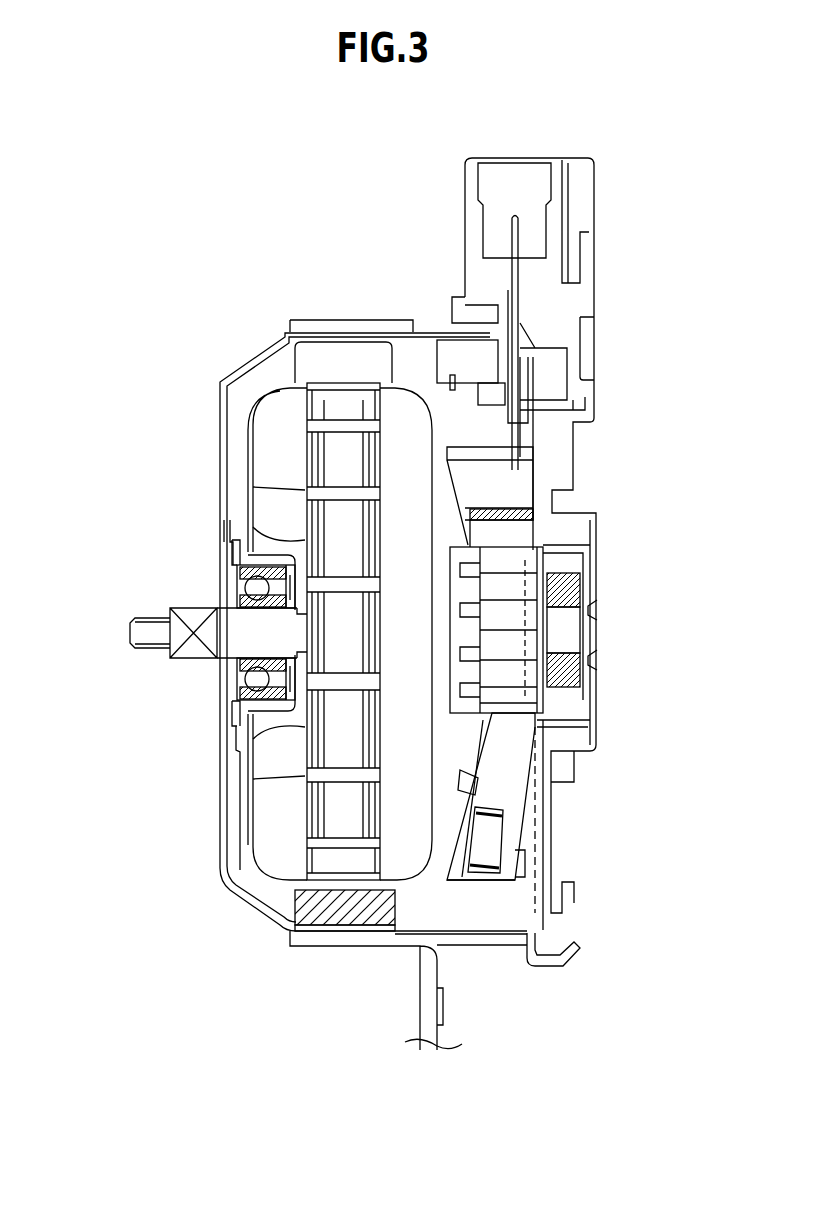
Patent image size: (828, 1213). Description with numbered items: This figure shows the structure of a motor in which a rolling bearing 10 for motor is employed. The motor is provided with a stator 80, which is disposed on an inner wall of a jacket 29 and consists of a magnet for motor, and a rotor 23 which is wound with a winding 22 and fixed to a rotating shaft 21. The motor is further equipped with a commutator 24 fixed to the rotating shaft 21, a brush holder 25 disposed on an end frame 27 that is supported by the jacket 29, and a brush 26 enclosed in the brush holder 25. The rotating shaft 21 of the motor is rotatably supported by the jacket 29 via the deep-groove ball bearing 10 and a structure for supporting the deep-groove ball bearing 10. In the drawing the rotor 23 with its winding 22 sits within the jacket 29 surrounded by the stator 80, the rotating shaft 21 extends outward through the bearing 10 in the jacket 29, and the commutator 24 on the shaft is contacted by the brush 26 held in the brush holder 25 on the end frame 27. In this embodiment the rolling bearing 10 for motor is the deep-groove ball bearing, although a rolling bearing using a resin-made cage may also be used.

The rolling bearing for motor 10 is at (237, 578).
The rotating shaft 21 is at (145, 633).
The winding 22 is at (275, 848).
The rotor 23 is at (254, 802).
The commutator 24 is at (510, 643).
The brush holder 25 is at (452, 882).
The brush 26 is at (503, 740).
The end frame 27 is at (562, 851).
The jacket 29 is at (260, 363).
The stator 80 is at (342, 910).